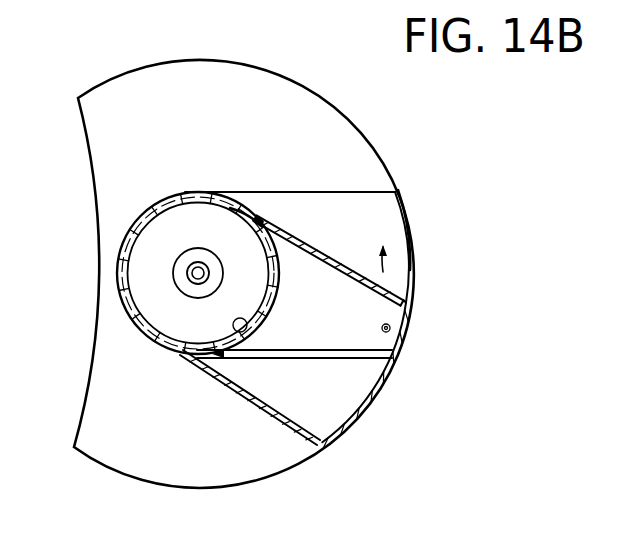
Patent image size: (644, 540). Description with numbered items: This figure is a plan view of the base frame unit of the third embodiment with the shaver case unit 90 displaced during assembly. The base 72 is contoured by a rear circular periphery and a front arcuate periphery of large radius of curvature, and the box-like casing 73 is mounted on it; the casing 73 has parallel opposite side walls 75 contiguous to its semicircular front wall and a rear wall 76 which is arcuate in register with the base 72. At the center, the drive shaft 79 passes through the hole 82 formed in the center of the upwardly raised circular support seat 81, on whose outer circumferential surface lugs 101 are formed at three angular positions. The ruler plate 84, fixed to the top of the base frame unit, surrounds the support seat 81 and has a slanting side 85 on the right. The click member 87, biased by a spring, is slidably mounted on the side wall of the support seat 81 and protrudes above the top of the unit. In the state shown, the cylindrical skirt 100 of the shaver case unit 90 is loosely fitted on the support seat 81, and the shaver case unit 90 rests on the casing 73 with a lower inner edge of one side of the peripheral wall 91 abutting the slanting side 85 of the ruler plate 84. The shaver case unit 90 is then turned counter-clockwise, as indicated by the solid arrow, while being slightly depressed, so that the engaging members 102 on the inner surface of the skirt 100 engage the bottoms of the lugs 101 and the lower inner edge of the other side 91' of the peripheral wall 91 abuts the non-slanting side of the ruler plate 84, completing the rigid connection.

The base 72 is at (216, 76).
The casing 73 is at (345, 184).
The side walls 75 is at (290, 191).
The rear wall 76 is at (412, 228).
The drive shaft 79 is at (193, 288).
The support seat 81 is at (173, 233).
The hole 82 is at (206, 261).
The ruler plate 84 is at (376, 304).
The slanting side 85 is at (366, 282).
The click member 87 is at (290, 264).
The shaver case unit 90 is at (398, 367).
The peripheral wall 91 is at (412, 243).
The other side of peripheral wall 91' is at (250, 430).
The cylindrical skirt 100 is at (276, 220).
The lugs 101 is at (130, 277).
The engaging members 102 is at (140, 242).